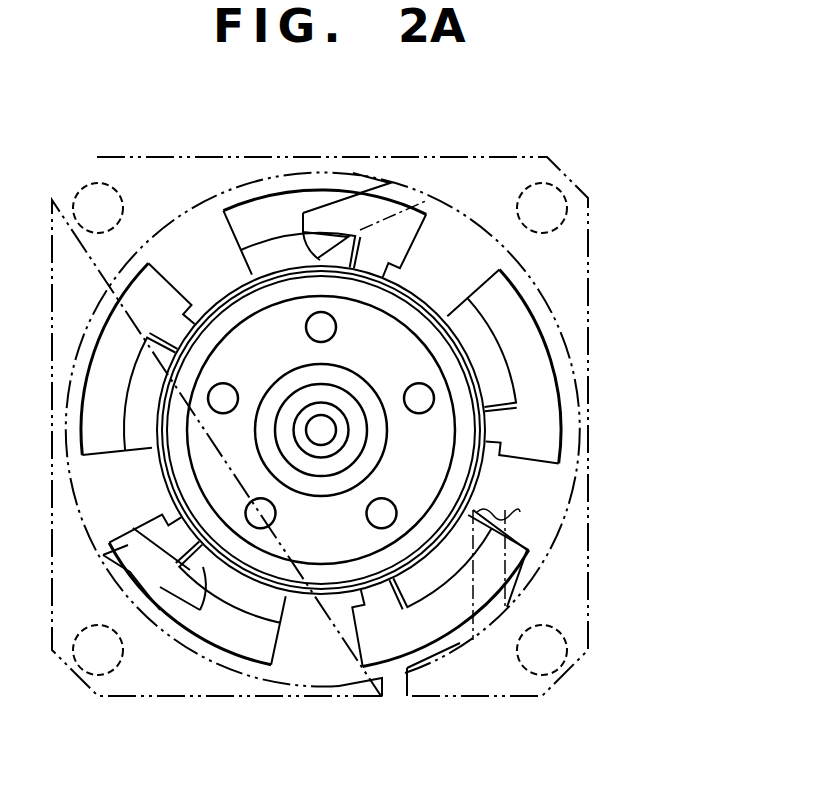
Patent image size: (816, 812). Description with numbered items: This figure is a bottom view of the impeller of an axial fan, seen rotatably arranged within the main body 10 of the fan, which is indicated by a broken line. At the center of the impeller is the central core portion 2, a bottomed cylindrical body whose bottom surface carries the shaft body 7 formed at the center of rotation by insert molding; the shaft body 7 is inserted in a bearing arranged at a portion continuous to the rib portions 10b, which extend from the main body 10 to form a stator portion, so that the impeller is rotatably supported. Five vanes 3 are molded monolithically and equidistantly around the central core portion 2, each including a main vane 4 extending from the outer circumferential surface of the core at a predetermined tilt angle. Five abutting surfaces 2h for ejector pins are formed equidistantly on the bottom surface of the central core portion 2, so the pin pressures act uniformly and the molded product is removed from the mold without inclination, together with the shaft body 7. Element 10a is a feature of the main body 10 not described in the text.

The central core portion 2 is at (427, 290).
The abutting surfaces 2h is at (427, 402).
The vanes 3 is at (553, 352).
The main vane 4 is at (535, 387).
The shaft body 7 is at (321, 430).
The main body 10 is at (483, 160).
The mounting hole 10a is at (566, 190).
The rib portions 10b is at (362, 192).